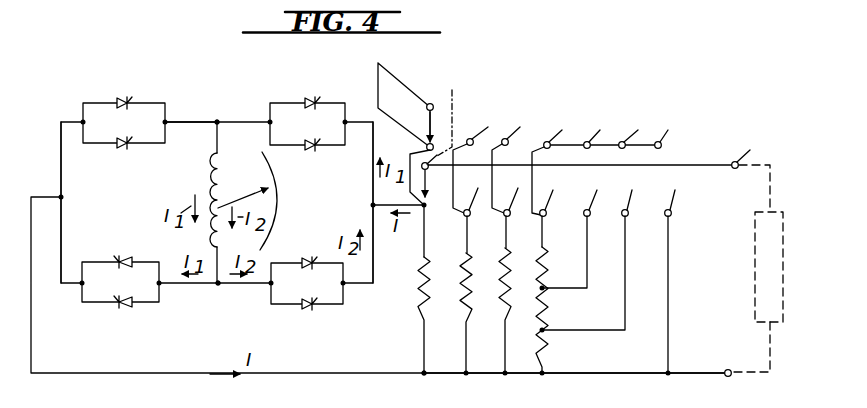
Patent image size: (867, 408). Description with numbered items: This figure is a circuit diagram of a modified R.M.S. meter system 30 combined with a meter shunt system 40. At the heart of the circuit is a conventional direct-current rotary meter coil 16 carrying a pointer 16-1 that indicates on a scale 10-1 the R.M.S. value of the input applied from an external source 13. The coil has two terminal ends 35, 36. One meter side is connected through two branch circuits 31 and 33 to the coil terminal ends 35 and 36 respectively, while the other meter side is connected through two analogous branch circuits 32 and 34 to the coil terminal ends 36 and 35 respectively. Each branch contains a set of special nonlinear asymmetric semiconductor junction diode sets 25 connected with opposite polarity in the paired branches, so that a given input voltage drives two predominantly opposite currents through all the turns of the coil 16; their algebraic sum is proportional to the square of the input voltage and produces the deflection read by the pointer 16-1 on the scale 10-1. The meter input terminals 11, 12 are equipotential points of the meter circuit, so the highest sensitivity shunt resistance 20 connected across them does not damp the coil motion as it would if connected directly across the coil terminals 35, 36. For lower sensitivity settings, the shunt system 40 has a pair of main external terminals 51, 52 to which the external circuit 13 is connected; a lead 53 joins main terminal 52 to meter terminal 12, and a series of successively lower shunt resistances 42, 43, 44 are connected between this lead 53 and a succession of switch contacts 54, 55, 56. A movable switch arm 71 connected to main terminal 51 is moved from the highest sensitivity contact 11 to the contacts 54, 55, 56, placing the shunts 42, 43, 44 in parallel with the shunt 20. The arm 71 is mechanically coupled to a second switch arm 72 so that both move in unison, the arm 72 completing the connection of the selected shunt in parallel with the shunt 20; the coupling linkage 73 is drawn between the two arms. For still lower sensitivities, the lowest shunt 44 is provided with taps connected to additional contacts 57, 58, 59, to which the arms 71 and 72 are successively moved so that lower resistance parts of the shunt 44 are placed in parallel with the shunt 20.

The scale 10-1 is at (279, 204).
The meter input terminal 11 is at (425, 207).
The meter input terminal 12 is at (423, 372).
The external source 13 is at (755, 278).
The rotary meter coil 16 is at (211, 177).
The pointer 16-1 is at (240, 197).
The shunt resistance 20 is at (420, 283).
The nonlinear asymmetric semiconductor junction diode set 25 is at (133, 113).
The R.M.S. meter system 30 is at (290, 94).
The branch circuit 31 is at (361, 163).
The branch circuit 32 is at (63, 240).
The branch circuit 33 is at (375, 273).
The branch circuit 34 is at (63, 173).
The coil terminal end 35 is at (217, 121).
The coil terminal end 36 is at (215, 287).
The meter shunt system 40 is at (607, 91).
The shunt resistance 42 is at (456, 268).
The shunt resistance 43 is at (497, 272).
The lowest shunt resistance 44 is at (545, 274).
The main external terminal 51 is at (751, 147).
The main external terminal 52 is at (731, 376).
The lead 53 is at (593, 373).
The switch contact 54 is at (476, 180).
The switch contact 55 is at (513, 178).
The switch contact 56 is at (552, 177).
The shunt switch contact 57 is at (577, 198).
The shunt switch contact 58 is at (594, 219).
The shunt switch contact 59 is at (668, 242).
The movable switch arm 71 is at (427, 185).
The switch arm 72 is at (428, 112).
The actuator linkage 73 is at (455, 92).